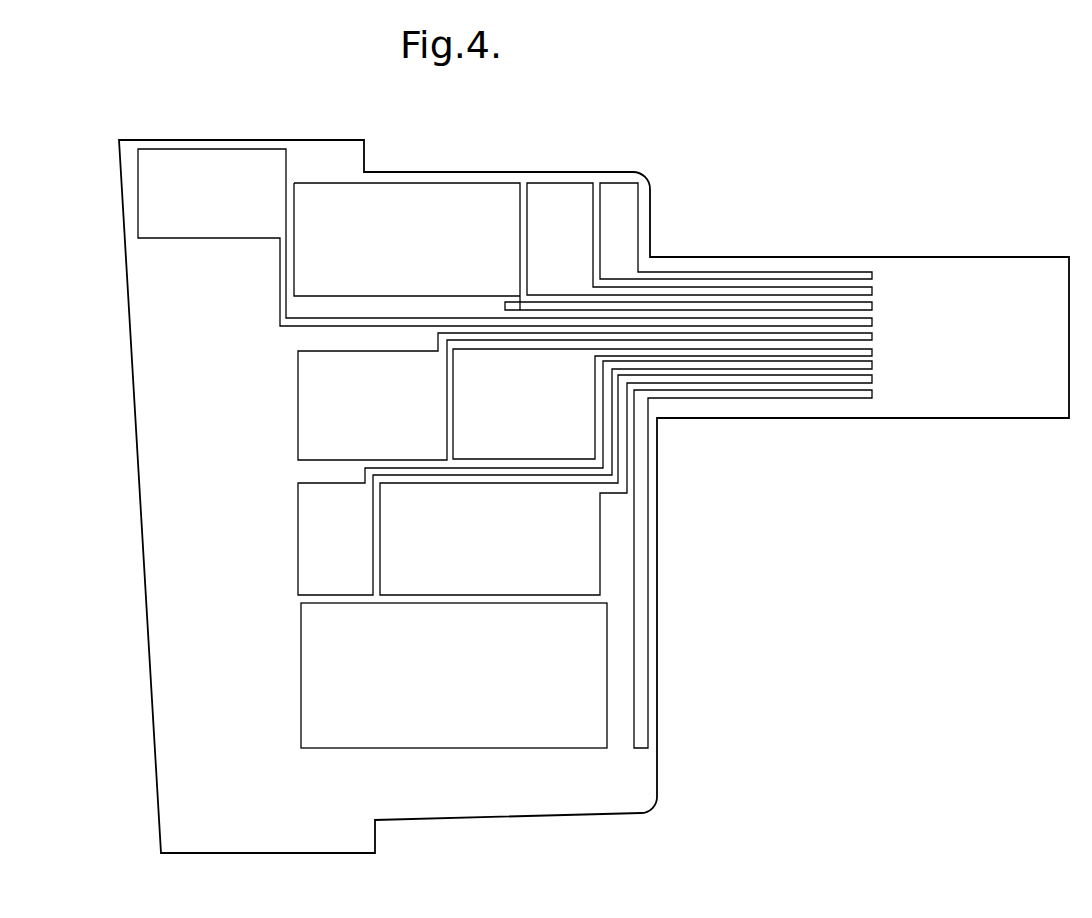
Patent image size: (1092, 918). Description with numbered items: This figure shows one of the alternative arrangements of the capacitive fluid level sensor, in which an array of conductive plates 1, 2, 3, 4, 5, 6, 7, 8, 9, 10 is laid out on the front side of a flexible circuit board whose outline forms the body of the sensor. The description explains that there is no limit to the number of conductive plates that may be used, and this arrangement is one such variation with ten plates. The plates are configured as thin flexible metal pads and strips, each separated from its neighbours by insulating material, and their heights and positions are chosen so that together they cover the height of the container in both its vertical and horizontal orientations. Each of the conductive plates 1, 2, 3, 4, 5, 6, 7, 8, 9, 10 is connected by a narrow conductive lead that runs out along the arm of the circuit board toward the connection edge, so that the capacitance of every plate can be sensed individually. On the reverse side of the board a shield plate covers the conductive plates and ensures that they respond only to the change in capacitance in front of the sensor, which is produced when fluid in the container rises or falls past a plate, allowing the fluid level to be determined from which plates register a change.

The conductive plate 1 is at (627, 714).
The conductive plate 2 is at (437, 737).
The conductive plate 3 is at (325, 543).
The conductive plate 4 is at (320, 406).
The electrode 5 is at (152, 182).
The electrode 6 is at (485, 205).
The electrode 7 is at (558, 192).
The electrode 8 is at (622, 198).
The electrode 9 is at (570, 437).
The electrode 10 is at (567, 553).